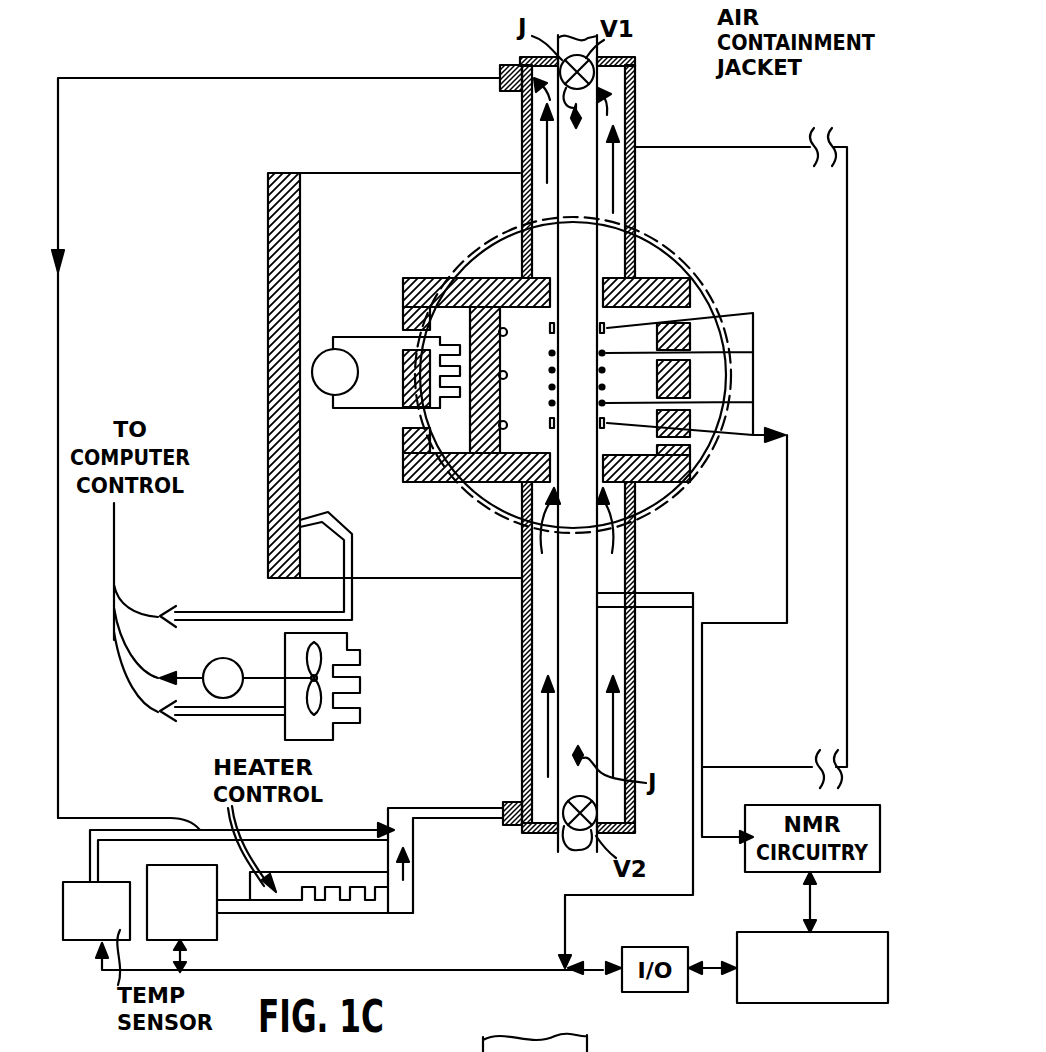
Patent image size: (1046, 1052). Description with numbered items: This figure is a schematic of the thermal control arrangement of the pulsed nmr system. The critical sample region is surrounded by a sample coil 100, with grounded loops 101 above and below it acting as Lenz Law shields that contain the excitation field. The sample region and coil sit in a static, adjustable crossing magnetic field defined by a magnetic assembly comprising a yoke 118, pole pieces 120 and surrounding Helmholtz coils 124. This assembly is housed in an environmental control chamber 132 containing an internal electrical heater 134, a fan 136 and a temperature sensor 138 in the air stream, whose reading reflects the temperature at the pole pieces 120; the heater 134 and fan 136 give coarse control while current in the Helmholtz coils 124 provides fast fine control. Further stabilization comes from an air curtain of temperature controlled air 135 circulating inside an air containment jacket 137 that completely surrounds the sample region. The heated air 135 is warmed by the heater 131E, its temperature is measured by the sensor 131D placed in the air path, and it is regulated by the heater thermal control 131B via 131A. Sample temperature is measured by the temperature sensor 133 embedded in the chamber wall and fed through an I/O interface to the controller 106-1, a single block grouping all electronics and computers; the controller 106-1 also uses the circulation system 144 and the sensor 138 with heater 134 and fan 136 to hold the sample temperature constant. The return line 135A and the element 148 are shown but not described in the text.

The sample coil 100 is at (548, 370).
The grounded loops 101 is at (606, 421).
The yoke 118 is at (290, 298).
The pole pieces 120 is at (675, 263).
The Helmholtz coils 124 is at (660, 252).
The air curtain control interface 131A is at (80, 940).
The heater thermal control 131B is at (217, 933).
The temperature sensor 131D is at (413, 845).
The heater 131E is at (345, 900).
The environmental control chamber 132 is at (268, 248).
The temperature sensor 133 is at (600, 593).
The electrical heater 134 is at (360, 680).
The temperature controlled air 135 is at (545, 162).
The air return line 135A is at (58, 790).
The fan 136 is at (305, 665).
The air containment jacket 137 is at (633, 105).
The temperature sensor 138 is at (330, 513).
The circulation system 144 is at (330, 396).
The thermal sensor 148 is at (507, 426).
The controller 106-1 is at (810, 1003).